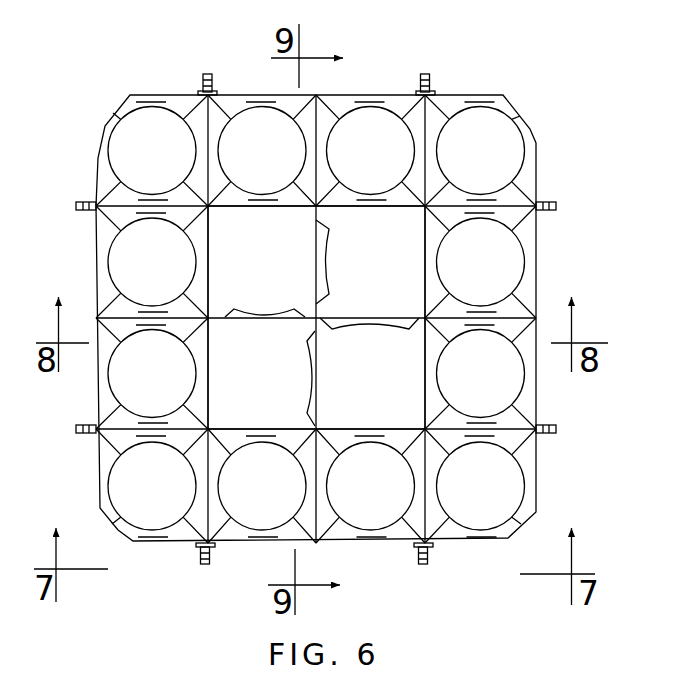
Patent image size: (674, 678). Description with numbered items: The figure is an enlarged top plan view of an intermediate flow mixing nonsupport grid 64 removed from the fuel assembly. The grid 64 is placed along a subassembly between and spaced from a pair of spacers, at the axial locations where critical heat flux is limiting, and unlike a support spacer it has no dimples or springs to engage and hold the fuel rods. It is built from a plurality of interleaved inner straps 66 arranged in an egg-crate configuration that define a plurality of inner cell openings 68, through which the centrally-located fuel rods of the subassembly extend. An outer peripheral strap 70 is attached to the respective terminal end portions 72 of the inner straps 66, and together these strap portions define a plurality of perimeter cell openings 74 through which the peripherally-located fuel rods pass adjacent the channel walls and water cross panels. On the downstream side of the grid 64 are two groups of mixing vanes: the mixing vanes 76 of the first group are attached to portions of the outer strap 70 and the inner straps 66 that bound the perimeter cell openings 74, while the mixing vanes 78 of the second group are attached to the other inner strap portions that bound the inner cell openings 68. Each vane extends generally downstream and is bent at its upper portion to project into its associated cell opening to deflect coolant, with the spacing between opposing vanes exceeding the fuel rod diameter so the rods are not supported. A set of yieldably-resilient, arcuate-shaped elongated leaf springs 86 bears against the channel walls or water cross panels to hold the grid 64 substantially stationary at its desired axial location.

The intermediate flow mixing nonsupport grid 64 is at (322, 316).
The inner straps 66 is at (237, 204).
The inner cell openings 68 is at (287, 250).
The outer peripheral strap 70 is at (174, 83).
The terminal end portions 72 is at (137, 192).
The perimeter cell openings 74 is at (147, 165).
The mixing vanes of the first group 76 is at (187, 140).
The mixing vanes of the second group 78 is at (270, 303).
The leaf springs 86 is at (206, 71).